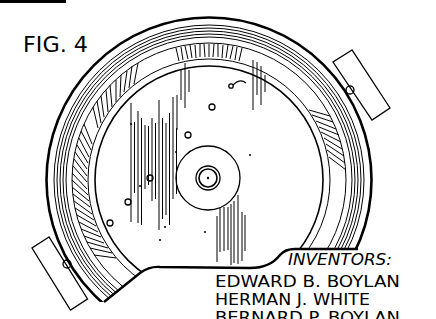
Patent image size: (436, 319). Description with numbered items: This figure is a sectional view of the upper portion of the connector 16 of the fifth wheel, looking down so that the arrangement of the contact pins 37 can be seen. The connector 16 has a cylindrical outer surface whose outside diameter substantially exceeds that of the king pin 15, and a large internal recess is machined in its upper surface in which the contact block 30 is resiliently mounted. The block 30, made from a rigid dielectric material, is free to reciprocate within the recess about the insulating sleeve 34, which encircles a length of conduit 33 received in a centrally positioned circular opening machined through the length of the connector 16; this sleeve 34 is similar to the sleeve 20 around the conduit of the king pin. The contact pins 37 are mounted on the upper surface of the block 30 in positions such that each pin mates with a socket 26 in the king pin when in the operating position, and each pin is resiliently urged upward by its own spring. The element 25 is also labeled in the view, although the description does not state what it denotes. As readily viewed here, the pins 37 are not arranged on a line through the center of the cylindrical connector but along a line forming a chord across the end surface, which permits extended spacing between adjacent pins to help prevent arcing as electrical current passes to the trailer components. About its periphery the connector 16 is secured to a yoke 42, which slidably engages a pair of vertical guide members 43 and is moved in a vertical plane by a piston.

The king pin 15 is at (177, 176).
The connector 16 is at (367, 134).
The sleeve 20 is at (1, 198).
The ring 25 is at (5, 130).
The socket 26 is at (179, 175).
The contact block 30 is at (278, 229).
The conduit 33 is at (222, 170).
The insulating sleeve 34 is at (229, 176).
The contact pins 37 is at (247, 91).
The yoke 42 is at (52, 223).
The vertical guide members 43 is at (363, 87).